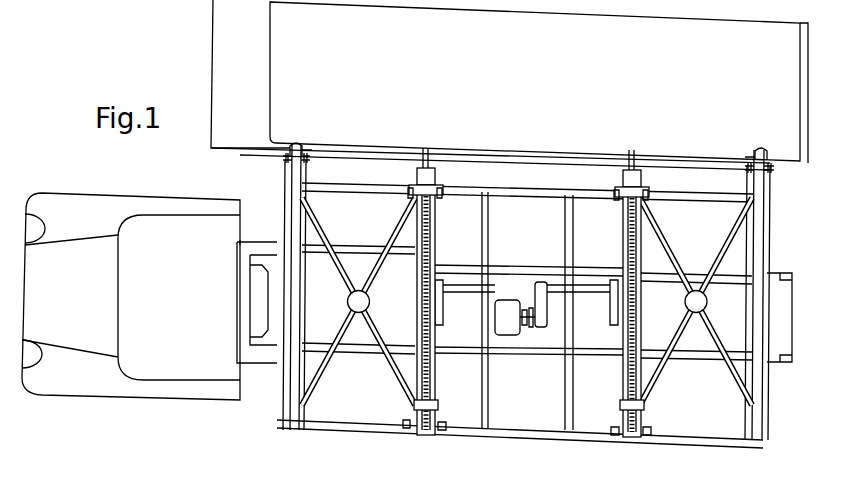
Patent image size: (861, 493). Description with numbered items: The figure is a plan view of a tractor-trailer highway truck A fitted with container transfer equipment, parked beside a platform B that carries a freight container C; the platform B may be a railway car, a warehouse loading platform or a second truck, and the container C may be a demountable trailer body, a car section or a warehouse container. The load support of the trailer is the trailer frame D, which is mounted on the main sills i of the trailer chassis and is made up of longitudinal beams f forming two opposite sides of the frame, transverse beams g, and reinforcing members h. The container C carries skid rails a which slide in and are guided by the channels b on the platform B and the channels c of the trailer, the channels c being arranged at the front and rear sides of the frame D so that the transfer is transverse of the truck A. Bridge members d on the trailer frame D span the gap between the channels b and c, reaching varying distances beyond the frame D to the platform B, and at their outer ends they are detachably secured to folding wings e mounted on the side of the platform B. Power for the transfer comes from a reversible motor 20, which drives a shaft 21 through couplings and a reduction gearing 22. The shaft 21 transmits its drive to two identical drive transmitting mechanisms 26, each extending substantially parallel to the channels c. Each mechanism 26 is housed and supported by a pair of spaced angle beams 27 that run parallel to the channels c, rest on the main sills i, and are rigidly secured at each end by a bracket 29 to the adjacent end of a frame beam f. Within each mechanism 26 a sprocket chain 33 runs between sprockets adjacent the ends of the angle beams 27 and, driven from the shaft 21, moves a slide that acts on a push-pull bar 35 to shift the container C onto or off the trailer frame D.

The vehicle or highway truck A is at (131, 296).
The platform B is at (250, 74).
The freight container C is at (539, 82).
The trailer frame D is at (342, 424).
The skid rails a is at (295, 143).
The channels b is at (306, 148).
The channels c is at (290, 213).
The bridge members d is at (283, 170).
The folding wings e is at (308, 166).
The longitudinal beams f is at (540, 190).
The transverse beams g is at (560, 400).
The reinforcing members h is at (527, 301).
The main sills i is at (318, 290).
The reversible motor 20 is at (507, 317).
The shaft 21 is at (516, 295).
The reduction gearing 22 is at (531, 326).
The drive transmitting mechanisms 26 is at (436, 365).
The angle beams 27 is at (416, 400).
The bracket 29 is at (410, 196).
The sprocket chain 33 is at (436, 237).
The push-pull bar 35 is at (424, 150).